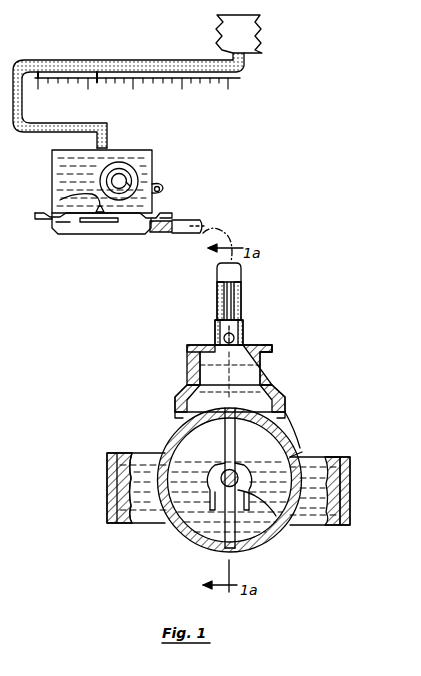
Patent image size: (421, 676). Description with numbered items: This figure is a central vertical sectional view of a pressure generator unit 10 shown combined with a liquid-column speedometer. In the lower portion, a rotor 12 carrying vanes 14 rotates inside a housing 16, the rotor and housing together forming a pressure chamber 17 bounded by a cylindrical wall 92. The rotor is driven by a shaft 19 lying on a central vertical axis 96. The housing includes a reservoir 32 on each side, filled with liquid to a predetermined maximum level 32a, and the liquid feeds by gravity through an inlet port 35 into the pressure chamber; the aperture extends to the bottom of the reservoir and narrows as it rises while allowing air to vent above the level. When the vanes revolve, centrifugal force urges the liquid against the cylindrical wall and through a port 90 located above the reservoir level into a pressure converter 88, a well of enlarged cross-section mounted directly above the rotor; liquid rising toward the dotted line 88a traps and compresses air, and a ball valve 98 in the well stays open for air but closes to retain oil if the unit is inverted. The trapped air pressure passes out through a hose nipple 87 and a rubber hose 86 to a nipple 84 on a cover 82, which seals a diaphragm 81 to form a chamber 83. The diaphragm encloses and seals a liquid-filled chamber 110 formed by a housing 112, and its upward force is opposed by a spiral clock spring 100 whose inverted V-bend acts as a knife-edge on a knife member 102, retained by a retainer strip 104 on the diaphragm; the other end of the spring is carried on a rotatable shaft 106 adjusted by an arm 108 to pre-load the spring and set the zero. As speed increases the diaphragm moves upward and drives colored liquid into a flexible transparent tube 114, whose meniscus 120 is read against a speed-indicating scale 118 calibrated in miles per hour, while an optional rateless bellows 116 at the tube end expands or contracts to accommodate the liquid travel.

The pressure generator unit 10 is at (168, 396).
The rotor 12 is at (238, 482).
The vanes 14 is at (184, 434).
The housing 16 is at (178, 536).
The pressure chamber 17 is at (292, 428).
The shaft 19 is at (220, 480).
The reservoir 32 is at (112, 487).
The maximum liquid level 32a is at (335, 455).
The inlet port 35 is at (279, 530).
The diaphragm 81 is at (150, 211).
The cover 82 is at (78, 236).
The chamber 83 is at (68, 226).
The nipple 84 is at (158, 235).
The rubber hose 86 is at (188, 236).
The hose nipple 87 is at (243, 317).
The pressure converter 88 is at (200, 372).
The dotted line liquid level 88a is at (272, 358).
The port 90 is at (183, 411).
The cylindrical wall 92 is at (298, 452).
The central vertical axis 96 is at (226, 550).
The ball valve 98 is at (222, 335).
The spiral clock spring 100 is at (145, 178).
The knife member 102 is at (101, 222).
The retainer strip 104 is at (90, 207).
The rotatable shaft 106 is at (122, 178).
The arm 108 is at (164, 190).
The chamber 110 is at (68, 180).
The housing 112 is at (66, 151).
The flexible transparent tube 114 is at (168, 66).
The bellows 116 is at (258, 32).
The speed-indicating scale 118 is at (98, 75).
The meniscus 120 is at (42, 70).